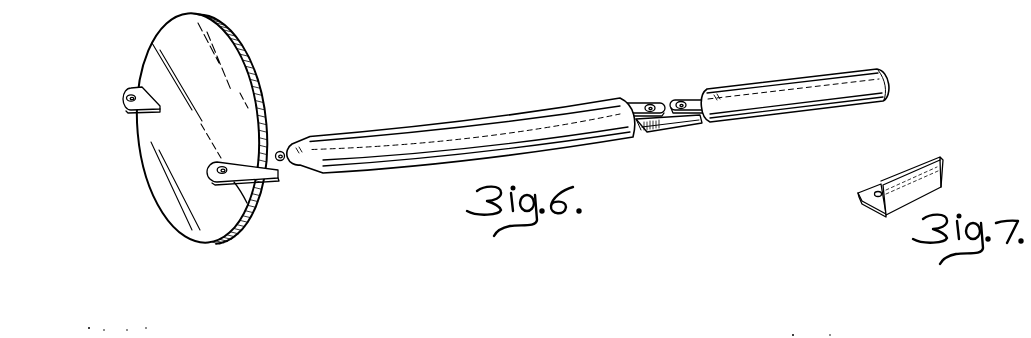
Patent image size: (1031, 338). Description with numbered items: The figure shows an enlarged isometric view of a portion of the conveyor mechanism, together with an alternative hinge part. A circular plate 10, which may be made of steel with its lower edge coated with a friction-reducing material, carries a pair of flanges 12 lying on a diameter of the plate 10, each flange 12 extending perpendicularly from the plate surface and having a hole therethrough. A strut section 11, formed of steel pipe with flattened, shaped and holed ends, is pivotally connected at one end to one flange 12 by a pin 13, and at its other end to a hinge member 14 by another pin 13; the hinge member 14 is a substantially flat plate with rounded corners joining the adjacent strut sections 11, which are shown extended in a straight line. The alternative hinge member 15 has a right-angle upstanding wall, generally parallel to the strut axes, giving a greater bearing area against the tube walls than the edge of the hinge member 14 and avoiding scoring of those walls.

In FIG. 6, the circular plate 10 is at (271, 30).
In FIG. 6, the strut section 11 is at (423, 124).
In FIG. 6, the flange 12 is at (122, 92).
In FIG. 6, the pin 13 is at (282, 150).
In FIG. 6, the hinge member 14 is at (680, 130).
In FIG. 7, the hinge member 15 is at (947, 176).